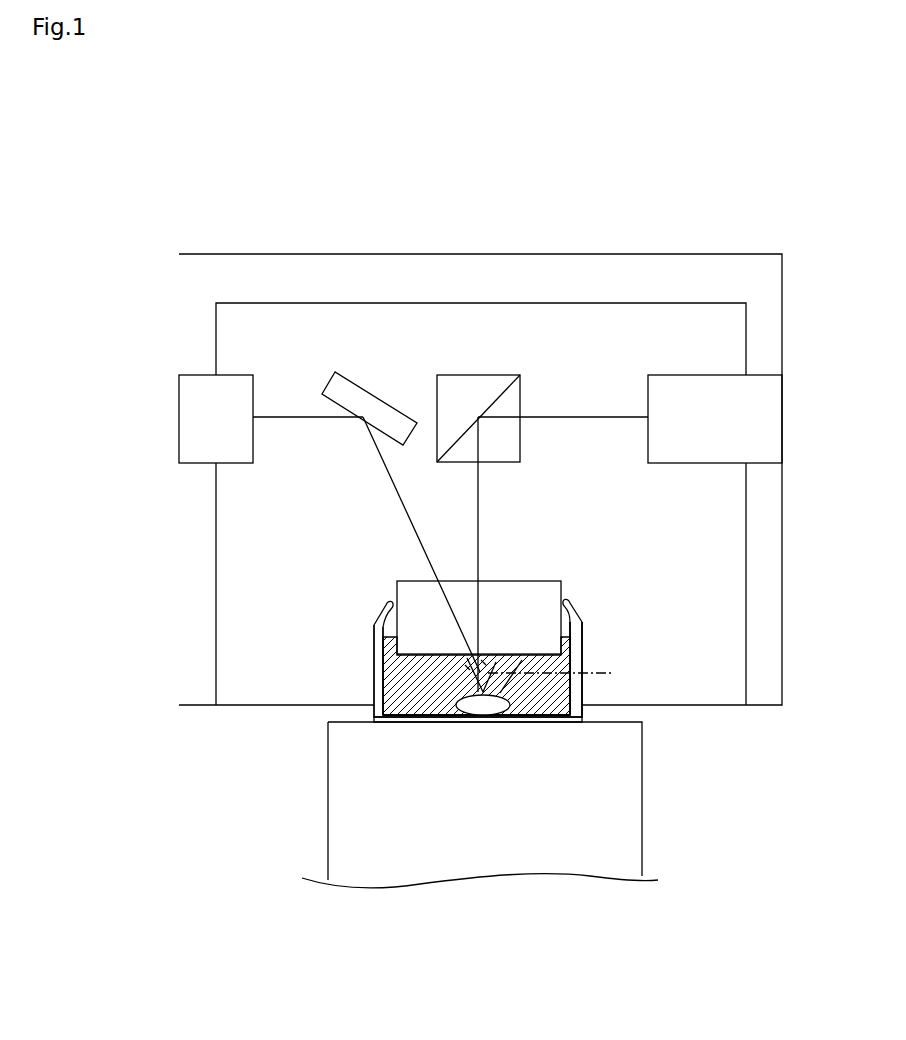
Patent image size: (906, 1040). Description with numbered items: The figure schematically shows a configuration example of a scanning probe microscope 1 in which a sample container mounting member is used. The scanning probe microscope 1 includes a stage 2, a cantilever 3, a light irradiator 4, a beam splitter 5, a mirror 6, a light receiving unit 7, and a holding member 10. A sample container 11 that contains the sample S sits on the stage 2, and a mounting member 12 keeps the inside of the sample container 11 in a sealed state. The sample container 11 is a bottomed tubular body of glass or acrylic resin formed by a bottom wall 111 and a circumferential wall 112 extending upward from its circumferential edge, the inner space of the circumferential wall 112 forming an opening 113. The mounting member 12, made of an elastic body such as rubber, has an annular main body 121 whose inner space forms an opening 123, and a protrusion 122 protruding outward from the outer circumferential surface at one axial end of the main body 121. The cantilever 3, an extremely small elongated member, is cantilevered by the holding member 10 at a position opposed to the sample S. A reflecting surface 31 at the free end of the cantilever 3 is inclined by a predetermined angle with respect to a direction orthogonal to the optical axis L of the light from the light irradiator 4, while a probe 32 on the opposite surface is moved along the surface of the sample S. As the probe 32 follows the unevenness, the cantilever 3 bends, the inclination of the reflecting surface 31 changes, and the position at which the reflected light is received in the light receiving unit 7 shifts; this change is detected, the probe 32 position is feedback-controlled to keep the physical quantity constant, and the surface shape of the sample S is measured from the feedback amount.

The scanning probe microscope 1 is at (731, 218).
The stage 2 is at (642, 820).
The cantilever 3 is at (520, 662).
The light irradiator 4 is at (693, 464).
The beam splitter 5 is at (498, 375).
The mirror 6 is at (363, 387).
The light receiving unit 7 is at (228, 464).
The holding member 10 is at (512, 581).
The sample container 11 is at (418, 722).
The mounting member 12 is at (583, 660).
The reflecting surface 31 is at (481, 660).
The probe 32 is at (465, 665).
The bottom wall 111 is at (448, 722).
The circumferential wall 112 is at (388, 722).
The opening 113 is at (394, 609).
The main body 121 is at (584, 648).
The protrusion 122 is at (568, 604).
The opening 123 is at (570, 722).
The optical axis L is at (480, 500).
The sample S is at (480, 717).